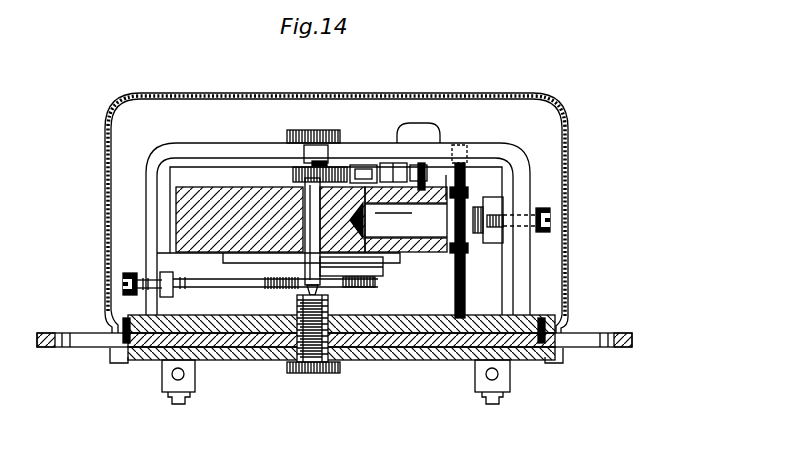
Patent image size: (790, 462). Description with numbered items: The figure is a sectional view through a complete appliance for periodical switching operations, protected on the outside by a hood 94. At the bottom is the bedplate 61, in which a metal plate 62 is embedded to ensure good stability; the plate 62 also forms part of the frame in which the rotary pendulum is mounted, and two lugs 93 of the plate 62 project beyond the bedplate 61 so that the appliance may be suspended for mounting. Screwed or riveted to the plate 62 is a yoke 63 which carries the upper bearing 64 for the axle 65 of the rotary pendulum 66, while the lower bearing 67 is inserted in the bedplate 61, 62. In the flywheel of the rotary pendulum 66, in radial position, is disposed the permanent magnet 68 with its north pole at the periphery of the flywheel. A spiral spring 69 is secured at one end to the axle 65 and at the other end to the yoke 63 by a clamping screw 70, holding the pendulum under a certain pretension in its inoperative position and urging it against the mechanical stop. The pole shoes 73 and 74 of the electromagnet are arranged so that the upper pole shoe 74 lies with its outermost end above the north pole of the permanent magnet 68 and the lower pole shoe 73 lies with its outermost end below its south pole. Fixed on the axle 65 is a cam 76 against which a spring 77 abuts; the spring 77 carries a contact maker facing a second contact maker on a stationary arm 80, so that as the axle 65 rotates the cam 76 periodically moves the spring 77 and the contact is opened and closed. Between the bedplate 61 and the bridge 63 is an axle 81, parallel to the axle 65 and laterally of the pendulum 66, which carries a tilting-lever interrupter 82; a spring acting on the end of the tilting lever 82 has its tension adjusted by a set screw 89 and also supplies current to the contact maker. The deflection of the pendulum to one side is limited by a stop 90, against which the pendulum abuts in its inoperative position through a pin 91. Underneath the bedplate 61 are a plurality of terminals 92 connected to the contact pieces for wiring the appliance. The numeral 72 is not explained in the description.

The bedplate 61 is at (410, 360).
The metal plate 62 is at (437, 345).
The yoke 63 is at (150, 202).
The upper bearing 64 is at (297, 128).
The axle 65 is at (307, 200).
The rotary pendulum 66 is at (190, 228).
The lower bearing 67 is at (298, 373).
The permanent magnet 68 is at (378, 222).
The spiral spring 69 is at (222, 287).
The clamping screw 70 is at (122, 293).
The gear housing 72 is at (385, 277).
The pole shoe 73 is at (347, 287).
The pole shoe 74 is at (396, 165).
The cam 76 is at (343, 167).
The spring 77 is at (370, 167).
The stationary arm 80 is at (167, 173).
The axle 81 is at (458, 295).
The tilting-lever interrupter 82 is at (477, 193).
The set screw 89 is at (543, 213).
The stop 90 is at (443, 158).
The pin 91 is at (432, 178).
The terminals 92 is at (163, 367).
The lugs 93 is at (100, 347).
The hood 94 is at (565, 219).